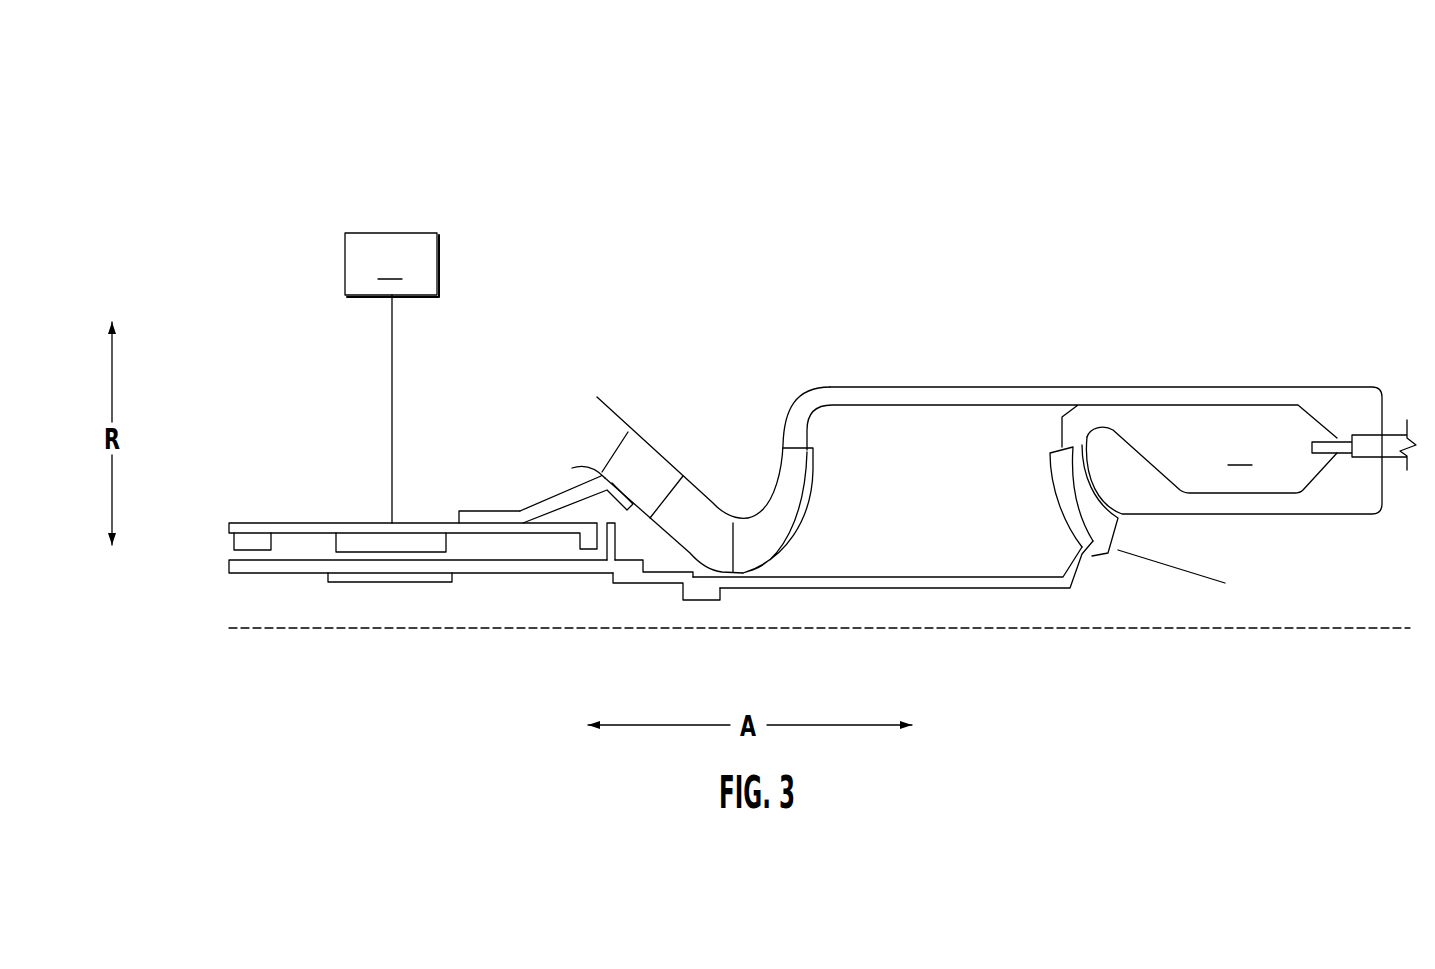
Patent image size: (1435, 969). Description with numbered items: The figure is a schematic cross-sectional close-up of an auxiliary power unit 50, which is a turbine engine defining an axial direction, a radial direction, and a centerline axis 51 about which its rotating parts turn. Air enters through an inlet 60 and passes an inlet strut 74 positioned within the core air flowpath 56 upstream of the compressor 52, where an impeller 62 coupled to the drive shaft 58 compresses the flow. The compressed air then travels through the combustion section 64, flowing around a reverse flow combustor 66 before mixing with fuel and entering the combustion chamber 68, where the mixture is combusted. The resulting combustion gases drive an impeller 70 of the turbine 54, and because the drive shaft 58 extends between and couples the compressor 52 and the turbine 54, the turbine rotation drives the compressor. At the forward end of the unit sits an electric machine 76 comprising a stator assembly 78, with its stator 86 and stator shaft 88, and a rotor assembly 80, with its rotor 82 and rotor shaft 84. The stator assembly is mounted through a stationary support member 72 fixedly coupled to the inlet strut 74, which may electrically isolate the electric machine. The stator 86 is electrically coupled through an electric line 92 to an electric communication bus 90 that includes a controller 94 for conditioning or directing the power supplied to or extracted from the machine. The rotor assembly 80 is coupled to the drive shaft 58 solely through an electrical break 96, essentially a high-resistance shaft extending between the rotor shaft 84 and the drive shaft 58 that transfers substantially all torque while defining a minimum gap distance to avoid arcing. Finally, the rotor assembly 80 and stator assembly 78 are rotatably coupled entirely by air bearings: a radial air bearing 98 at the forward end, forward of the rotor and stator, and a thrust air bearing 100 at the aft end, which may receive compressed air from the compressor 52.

The auxiliary power unit 50 is at (948, 204).
The axis 51 is at (1287, 627).
The compressor 52 is at (747, 487).
The turbine 54 is at (1052, 493).
The core air flowpath 56 is at (967, 491).
The drive shaft 58 is at (893, 577).
The inlet 60 is at (654, 450).
The impeller 62 is at (787, 476).
The combustion section 64 is at (1123, 416).
The combustor 66 is at (1281, 404).
The combustion chamber 68 is at (1251, 456).
The impeller 70 is at (1092, 518).
The stationary support member 72 is at (558, 497).
The inlet strut 74 is at (637, 467).
The electric machine 76 is at (399, 457).
The stator assembly 78 is at (300, 511).
The rotor assembly 80 is at (469, 599).
The rotor 82 is at (392, 580).
The rotor shaft 84 is at (275, 573).
The stator 86 is at (407, 532).
The stator shaft 88 is at (481, 529).
The electric communication bus 90 is at (431, 378).
The electric line 92 is at (392, 387).
The controller 94 is at (392, 265).
The electrical break 96 is at (660, 583).
The radial air bearing 98 is at (220, 545).
The thrust air bearing 100 is at (600, 548).